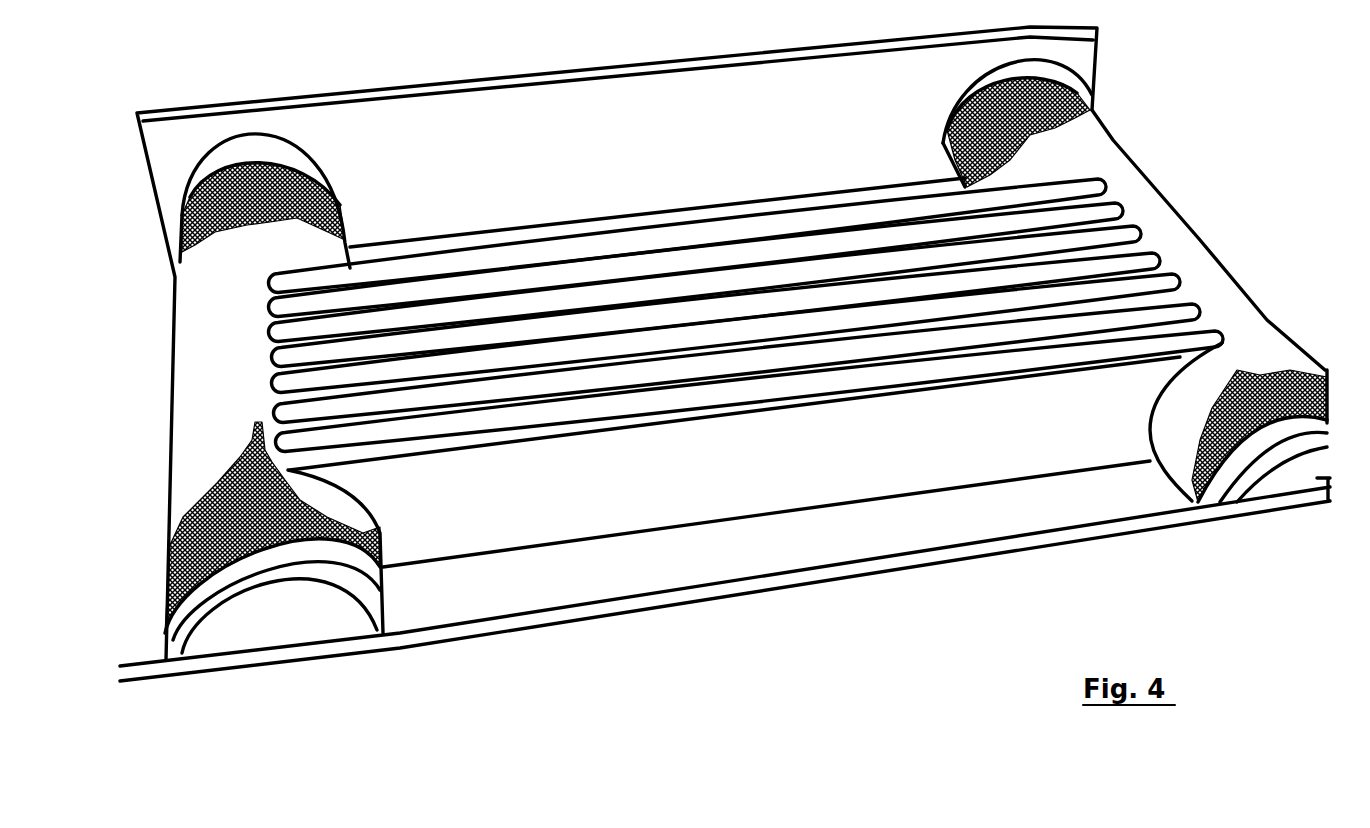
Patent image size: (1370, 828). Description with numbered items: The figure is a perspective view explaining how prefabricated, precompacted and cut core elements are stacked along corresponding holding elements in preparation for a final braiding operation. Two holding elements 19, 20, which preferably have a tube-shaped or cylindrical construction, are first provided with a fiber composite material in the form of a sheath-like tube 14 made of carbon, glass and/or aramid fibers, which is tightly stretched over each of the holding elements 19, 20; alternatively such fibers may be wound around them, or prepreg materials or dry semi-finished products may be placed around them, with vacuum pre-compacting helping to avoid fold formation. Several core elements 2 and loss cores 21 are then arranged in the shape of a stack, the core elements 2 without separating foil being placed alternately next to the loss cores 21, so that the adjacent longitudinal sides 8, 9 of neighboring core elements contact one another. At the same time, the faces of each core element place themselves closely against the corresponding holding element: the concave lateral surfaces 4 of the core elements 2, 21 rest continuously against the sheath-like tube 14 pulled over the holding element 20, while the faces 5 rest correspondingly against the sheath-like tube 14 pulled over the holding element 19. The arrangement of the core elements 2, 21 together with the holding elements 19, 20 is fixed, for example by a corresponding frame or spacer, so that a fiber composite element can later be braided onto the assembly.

The core element 2 is at (1123, 229).
The loss core 21 is at (1148, 255).
The concave lateral surface 4 is at (368, 481).
The face 5 is at (1143, 383).
The longitudinal side 8 is at (722, 496).
The longitudinal side 9 is at (791, 290).
The sheath-like tube 14 is at (218, 230).
The holding element 19 is at (963, 103).
The holding element 20 is at (314, 160).